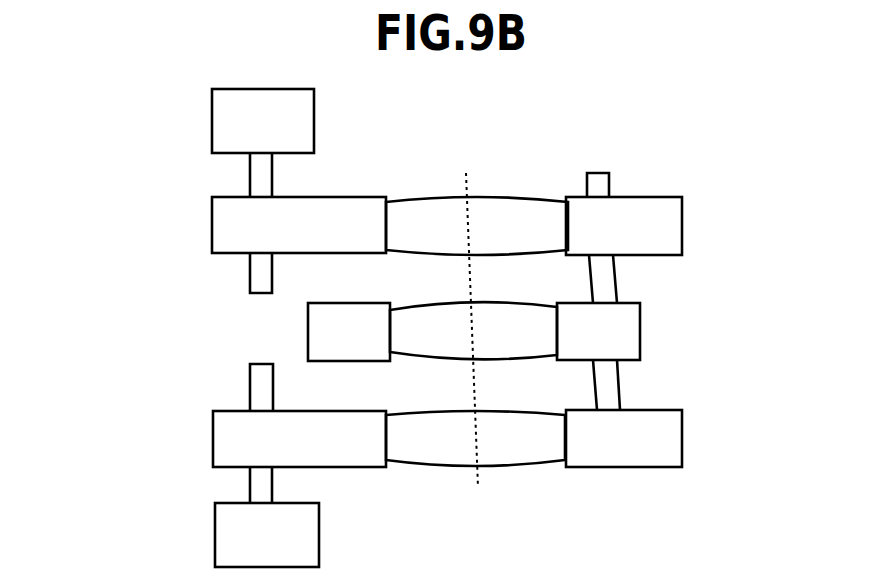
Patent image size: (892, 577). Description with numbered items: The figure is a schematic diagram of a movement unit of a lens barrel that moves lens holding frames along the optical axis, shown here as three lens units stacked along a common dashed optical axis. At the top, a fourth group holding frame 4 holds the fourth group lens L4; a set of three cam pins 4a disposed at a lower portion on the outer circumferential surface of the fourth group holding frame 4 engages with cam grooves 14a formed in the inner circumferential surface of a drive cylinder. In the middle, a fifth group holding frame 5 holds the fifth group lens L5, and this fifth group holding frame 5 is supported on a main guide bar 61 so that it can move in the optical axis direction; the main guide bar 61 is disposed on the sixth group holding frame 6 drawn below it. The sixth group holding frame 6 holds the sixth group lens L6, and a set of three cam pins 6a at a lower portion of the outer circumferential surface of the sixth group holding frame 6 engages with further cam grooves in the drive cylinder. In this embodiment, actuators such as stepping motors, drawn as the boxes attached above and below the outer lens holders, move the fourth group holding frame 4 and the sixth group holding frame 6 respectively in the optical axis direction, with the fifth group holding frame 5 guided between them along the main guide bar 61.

The cam pins 4a is at (260, 220).
The cam grooves 14a is at (261, 243).
The fourth group lens L4 is at (512, 210).
The fourth group holding frame 4 is at (665, 228).
The main guide bar 61 is at (605, 282).
The fifth group lens L5 is at (540, 333).
The fifth group holding frame 5 is at (630, 350).
The cam pins 6a is at (260, 445).
The sixth group lens L6 is at (545, 438).
The sixth group holding frame 6 is at (663, 455).